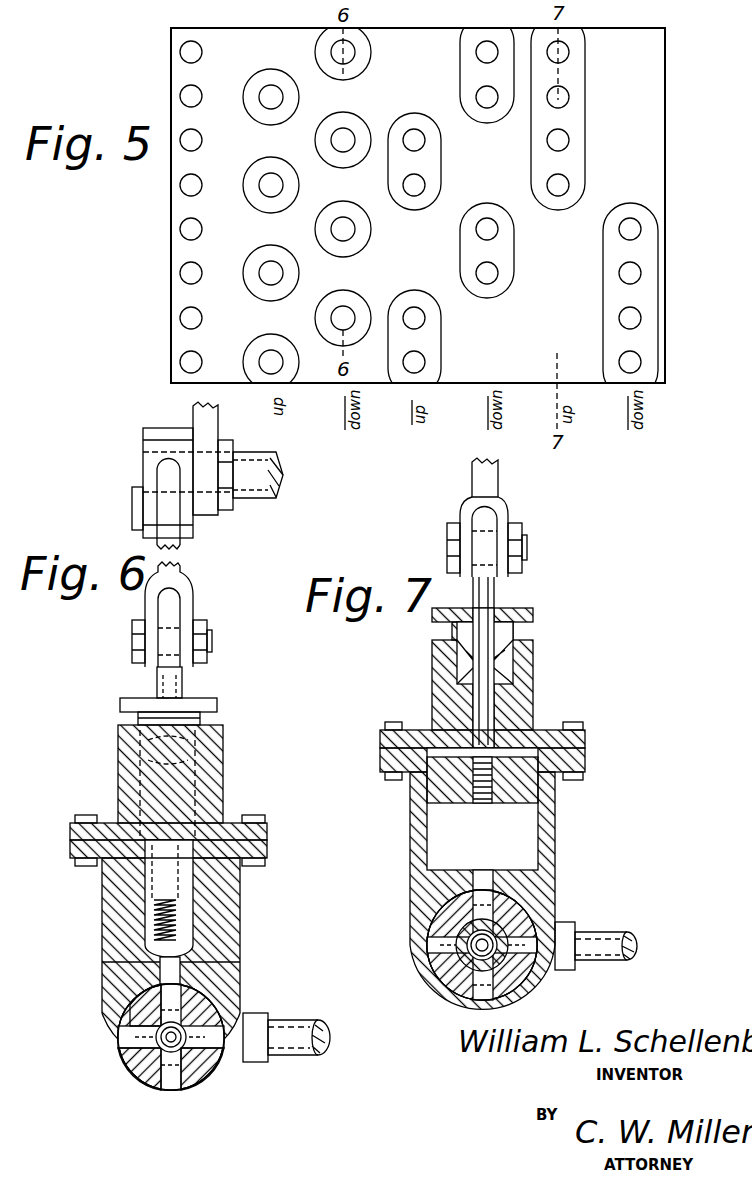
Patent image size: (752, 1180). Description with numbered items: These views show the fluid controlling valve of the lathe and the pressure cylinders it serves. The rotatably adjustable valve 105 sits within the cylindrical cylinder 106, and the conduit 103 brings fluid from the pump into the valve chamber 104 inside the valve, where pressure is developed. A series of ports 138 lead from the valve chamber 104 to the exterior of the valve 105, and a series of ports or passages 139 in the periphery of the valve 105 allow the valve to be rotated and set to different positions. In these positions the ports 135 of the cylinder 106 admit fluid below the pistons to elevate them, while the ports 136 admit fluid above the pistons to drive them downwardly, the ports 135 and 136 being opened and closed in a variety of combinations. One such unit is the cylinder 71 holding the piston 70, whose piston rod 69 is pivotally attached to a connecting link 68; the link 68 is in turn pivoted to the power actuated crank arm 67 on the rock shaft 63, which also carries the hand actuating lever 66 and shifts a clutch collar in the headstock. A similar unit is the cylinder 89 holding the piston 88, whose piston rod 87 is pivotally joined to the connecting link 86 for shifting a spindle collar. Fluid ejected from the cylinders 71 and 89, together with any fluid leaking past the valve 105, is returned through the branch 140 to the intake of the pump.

In FIG. 6, the rock shaft 63 is at (285, 478).
In FIG. 6, the hand actuating lever 66 is at (200, 425).
In FIG. 6, the power actuated crank arm 67 is at (195, 538).
In FIG. 6, the connecting link 68 is at (185, 548).
In FIG. 6, the piston rod 69 is at (183, 689).
In FIG. 6, the piston 70 is at (127, 890).
In FIG. 6, the cylinder 71 is at (120, 870).
In FIG. 7, the connecting link 86 is at (492, 482).
In FIG. 7, the piston rod 87 is at (500, 594).
In FIG. 7, the piston 88 is at (513, 797).
In FIG. 7, the cylinder 89 is at (540, 838).
In FIG. 6, the conduit 103 is at (152, 1050).
In FIG. 6, the valve chamber 104 is at (120, 1092).
In FIG. 6, the rotatably adjustable valve 105 is at (143, 1012).
In FIG. 6, the cylinder 106 is at (100, 1047).
In FIG. 7, the ports 135 is at (483, 878).
In FIG. 6, the ports 136 is at (183, 850).
In FIG. 6, the ports 138 is at (122, 1035).
In FIG. 7, the ports 138 is at (455, 893).
In FIG. 5, the ports or passages 139 is at (313, 358).
In FIG. 6, the ports or passages 139 is at (110, 987).
In FIG. 7, the ports or passages 139 is at (522, 913).
In FIG. 6, the branch of conduit 140 is at (290, 1018).
In FIG. 7, the branch of conduit 140 is at (607, 927).